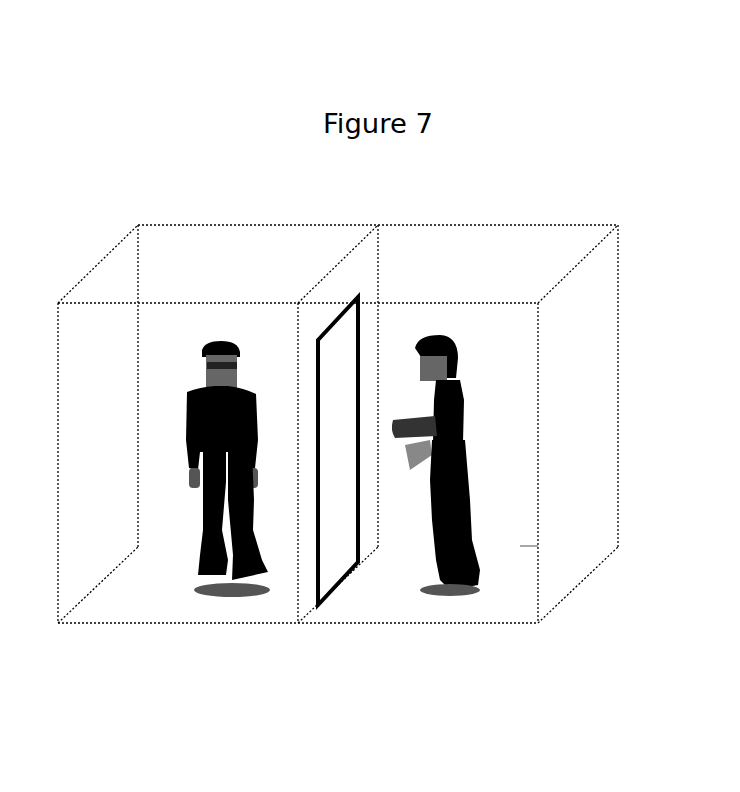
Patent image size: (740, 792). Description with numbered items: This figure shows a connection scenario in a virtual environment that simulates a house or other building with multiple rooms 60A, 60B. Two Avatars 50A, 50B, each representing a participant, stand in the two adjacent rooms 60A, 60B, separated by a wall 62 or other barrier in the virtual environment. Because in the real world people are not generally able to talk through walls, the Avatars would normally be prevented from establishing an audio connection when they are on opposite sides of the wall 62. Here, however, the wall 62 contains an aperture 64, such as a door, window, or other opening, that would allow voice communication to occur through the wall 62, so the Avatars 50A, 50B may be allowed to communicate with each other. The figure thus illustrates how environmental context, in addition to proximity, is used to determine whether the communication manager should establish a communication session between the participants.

The room 60A is at (183, 235).
The room 60B is at (504, 232).
The wall 62 is at (354, 258).
The aperture 64 is at (327, 573).
The Avatar 50A is at (190, 405).
The Avatar 50B is at (463, 390).